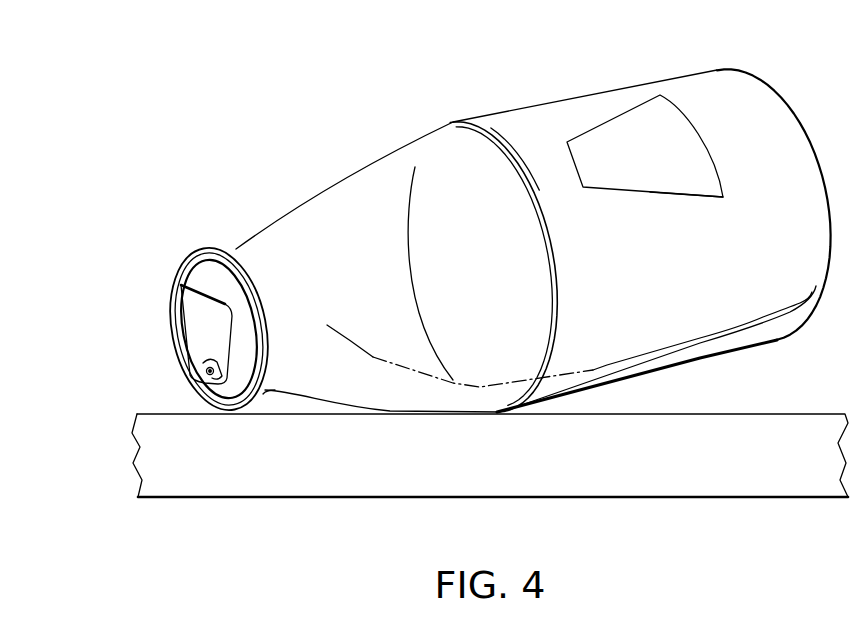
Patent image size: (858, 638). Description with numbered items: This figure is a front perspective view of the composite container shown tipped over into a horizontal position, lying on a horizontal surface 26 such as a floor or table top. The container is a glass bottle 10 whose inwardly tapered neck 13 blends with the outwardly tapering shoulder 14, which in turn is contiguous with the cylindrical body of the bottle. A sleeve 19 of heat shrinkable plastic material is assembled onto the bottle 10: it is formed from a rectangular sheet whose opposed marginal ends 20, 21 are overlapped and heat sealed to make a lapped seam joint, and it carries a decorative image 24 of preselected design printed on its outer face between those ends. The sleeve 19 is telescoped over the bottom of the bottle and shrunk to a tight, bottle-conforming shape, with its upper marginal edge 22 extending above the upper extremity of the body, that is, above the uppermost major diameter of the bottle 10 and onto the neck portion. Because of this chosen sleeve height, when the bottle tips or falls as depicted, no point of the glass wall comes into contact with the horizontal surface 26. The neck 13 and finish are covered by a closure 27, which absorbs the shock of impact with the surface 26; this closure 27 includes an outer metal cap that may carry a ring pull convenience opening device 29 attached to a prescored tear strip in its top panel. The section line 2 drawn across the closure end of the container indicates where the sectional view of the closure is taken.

The section line 2- 2 is at (327, 325).
The glass bottle 10 is at (374, 262).
The neck 13 is at (267, 393).
The shoulder 14 is at (353, 412).
The sleeve 19 is at (567, 165).
The marginal end 20 is at (617, 378).
The marginal end 21 is at (543, 368).
The upper marginal edge 22 is at (435, 131).
The decorative image 24 is at (683, 196).
The horizontal surface 26 is at (655, 413).
The closure 27 is at (196, 248).
The ring pull convenience opening device 29 is at (182, 290).